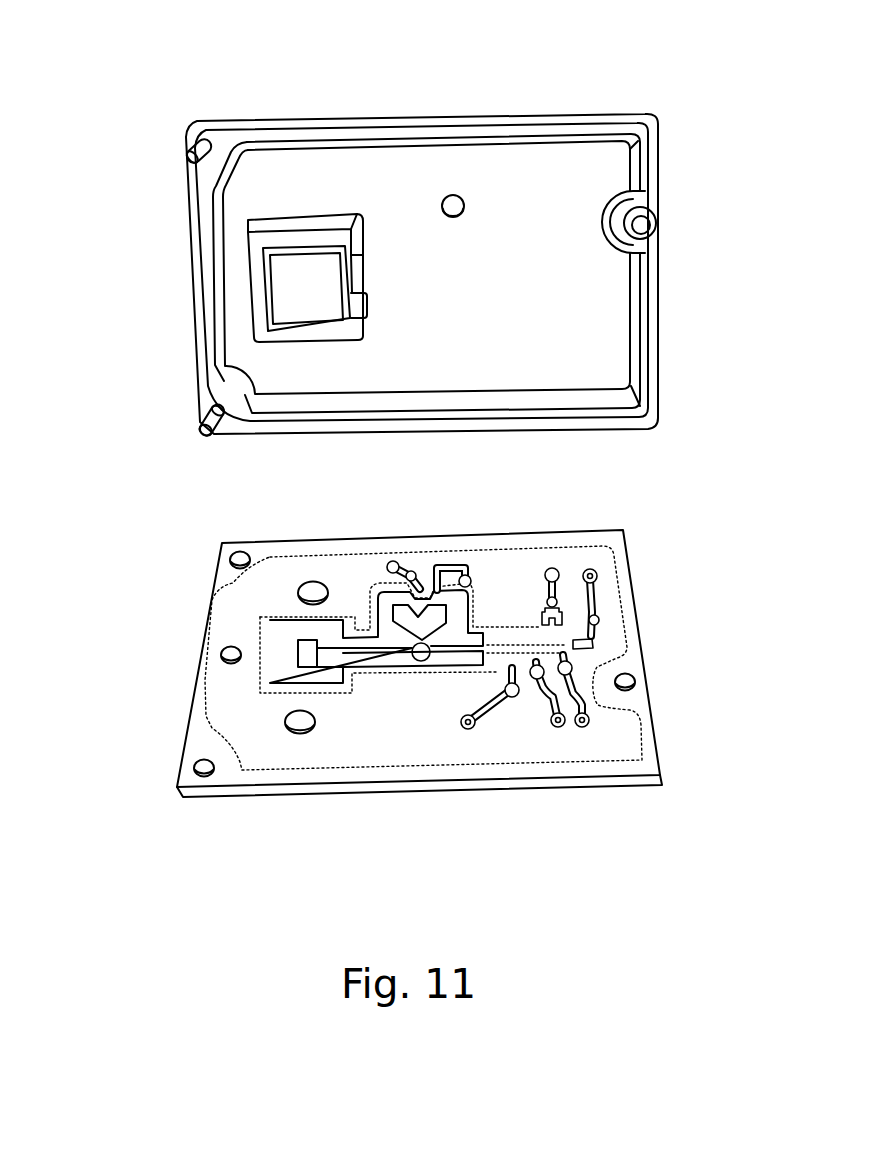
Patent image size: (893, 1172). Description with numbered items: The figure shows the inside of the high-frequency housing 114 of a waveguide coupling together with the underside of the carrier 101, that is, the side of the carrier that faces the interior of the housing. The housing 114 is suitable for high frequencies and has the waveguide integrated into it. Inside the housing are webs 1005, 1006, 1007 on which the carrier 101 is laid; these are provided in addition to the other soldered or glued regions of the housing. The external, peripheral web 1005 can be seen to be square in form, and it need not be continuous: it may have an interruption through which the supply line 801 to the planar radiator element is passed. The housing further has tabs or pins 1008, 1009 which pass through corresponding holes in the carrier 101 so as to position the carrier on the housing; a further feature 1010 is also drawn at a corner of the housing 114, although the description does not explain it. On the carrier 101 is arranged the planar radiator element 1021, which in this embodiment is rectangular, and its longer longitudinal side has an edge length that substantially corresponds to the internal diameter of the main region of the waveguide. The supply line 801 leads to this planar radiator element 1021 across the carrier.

The housing 114 is at (563, 167).
The external peripheral web 1005 is at (356, 264).
The web 1006 is at (203, 275).
The web 1007 is at (645, 303).
The pin 1008 is at (203, 431).
The pin 1009 is at (646, 226).
The upper guide pin 1010 is at (186, 137).
The carrier 101 is at (645, 744).
The supply line 801 is at (377, 650).
The planar radiator element 1021 is at (303, 648).